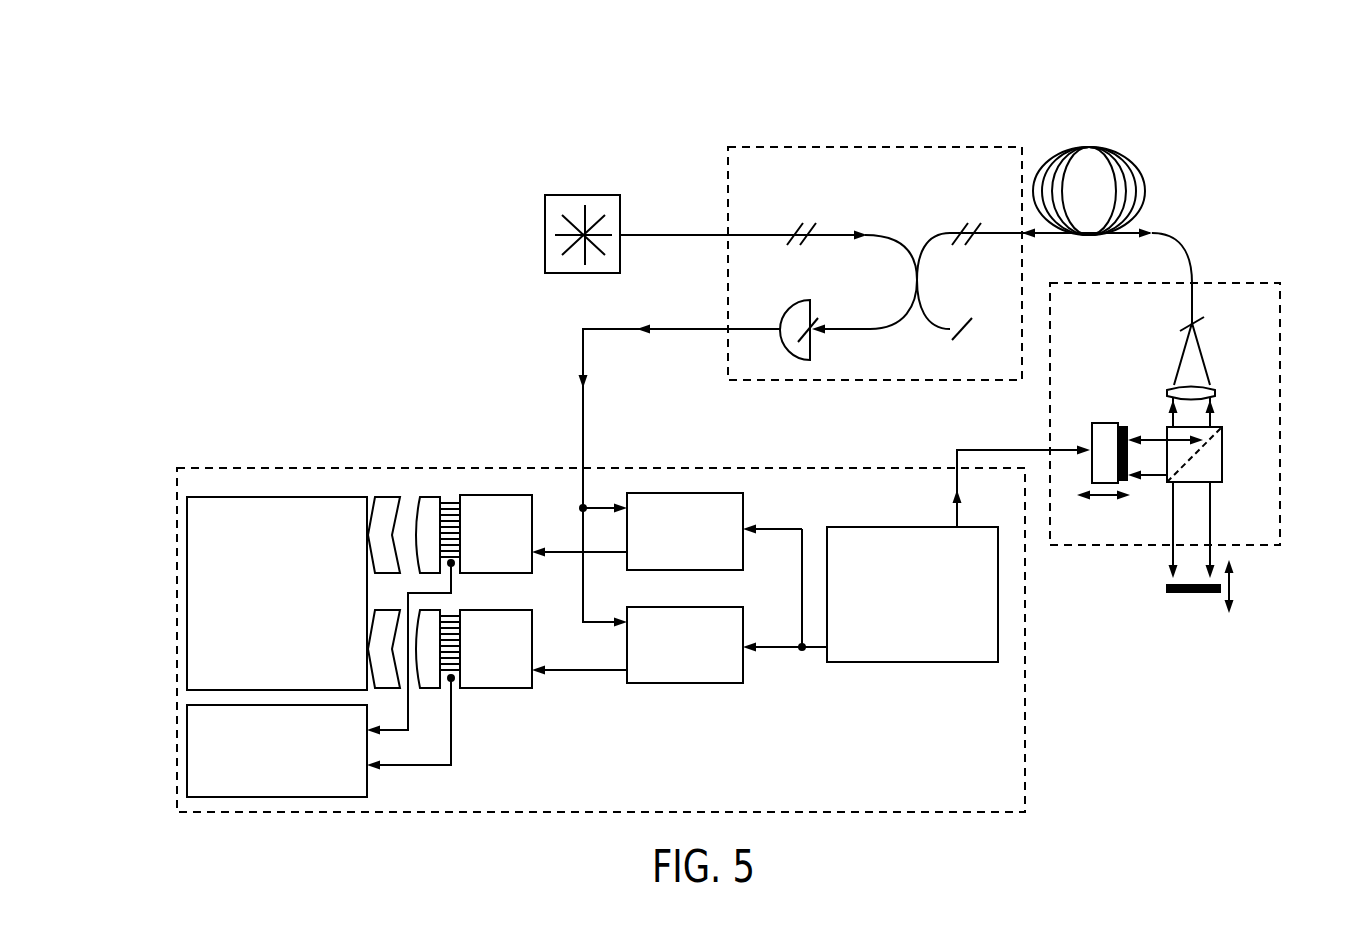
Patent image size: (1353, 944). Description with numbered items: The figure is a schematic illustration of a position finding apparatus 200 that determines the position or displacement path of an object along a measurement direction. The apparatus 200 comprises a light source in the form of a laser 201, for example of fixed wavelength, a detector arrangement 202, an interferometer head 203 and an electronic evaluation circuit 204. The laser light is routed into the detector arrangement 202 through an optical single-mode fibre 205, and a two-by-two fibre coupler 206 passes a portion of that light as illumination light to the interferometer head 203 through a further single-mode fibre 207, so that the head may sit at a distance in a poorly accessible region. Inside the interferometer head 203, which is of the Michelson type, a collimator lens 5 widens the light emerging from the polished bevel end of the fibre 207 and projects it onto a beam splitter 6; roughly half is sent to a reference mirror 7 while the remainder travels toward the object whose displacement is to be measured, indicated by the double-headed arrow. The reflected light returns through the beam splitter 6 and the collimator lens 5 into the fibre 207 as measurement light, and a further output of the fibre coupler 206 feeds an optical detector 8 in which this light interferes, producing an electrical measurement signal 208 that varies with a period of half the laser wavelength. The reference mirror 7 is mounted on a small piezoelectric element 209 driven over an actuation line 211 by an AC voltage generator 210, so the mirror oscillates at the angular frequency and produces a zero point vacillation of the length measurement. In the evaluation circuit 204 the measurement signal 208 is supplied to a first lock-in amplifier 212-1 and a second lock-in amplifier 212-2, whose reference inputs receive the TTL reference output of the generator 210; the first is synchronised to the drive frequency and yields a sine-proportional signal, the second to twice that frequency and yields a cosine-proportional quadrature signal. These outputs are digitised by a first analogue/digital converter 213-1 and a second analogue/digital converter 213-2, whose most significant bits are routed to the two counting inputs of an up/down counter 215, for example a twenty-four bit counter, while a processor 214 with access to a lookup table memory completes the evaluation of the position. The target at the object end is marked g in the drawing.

The position finding apparatus 200 is at (896, 70).
The laser 201 is at (610, 195).
The detector arrangement 202 is at (836, 147).
The interferometer head 203 is at (1280, 318).
The electronic evaluation circuit 204 is at (607, 812).
The optical single-mode fibre 205 is at (694, 233).
The 2×2 fibre coupler 206 is at (923, 220).
The further single-mode fibre 207 is at (1143, 190).
The electrical measurement signal 208 is at (675, 329).
The piezoelectric element 209 is at (1090, 428).
The AC voltage generator 210 is at (902, 527).
The actuation line 211 is at (957, 452).
The first lock-in amplifier 212-1 is at (712, 493).
The second lock-in amplifier 212-2 is at (683, 683).
The first analogue/digital converter 213-1 is at (510, 495).
The second analogue/digital converter 213-2 is at (522, 688).
The processor 214 is at (240, 497).
The up/down counter 215 is at (290, 797).
The collimator lens 5 is at (1215, 392).
The beam splitter 6 is at (1232, 455).
The reference mirror 7 is at (1121, 425).
The optical detector 8 is at (780, 308).
The target grating g is at (1175, 593).